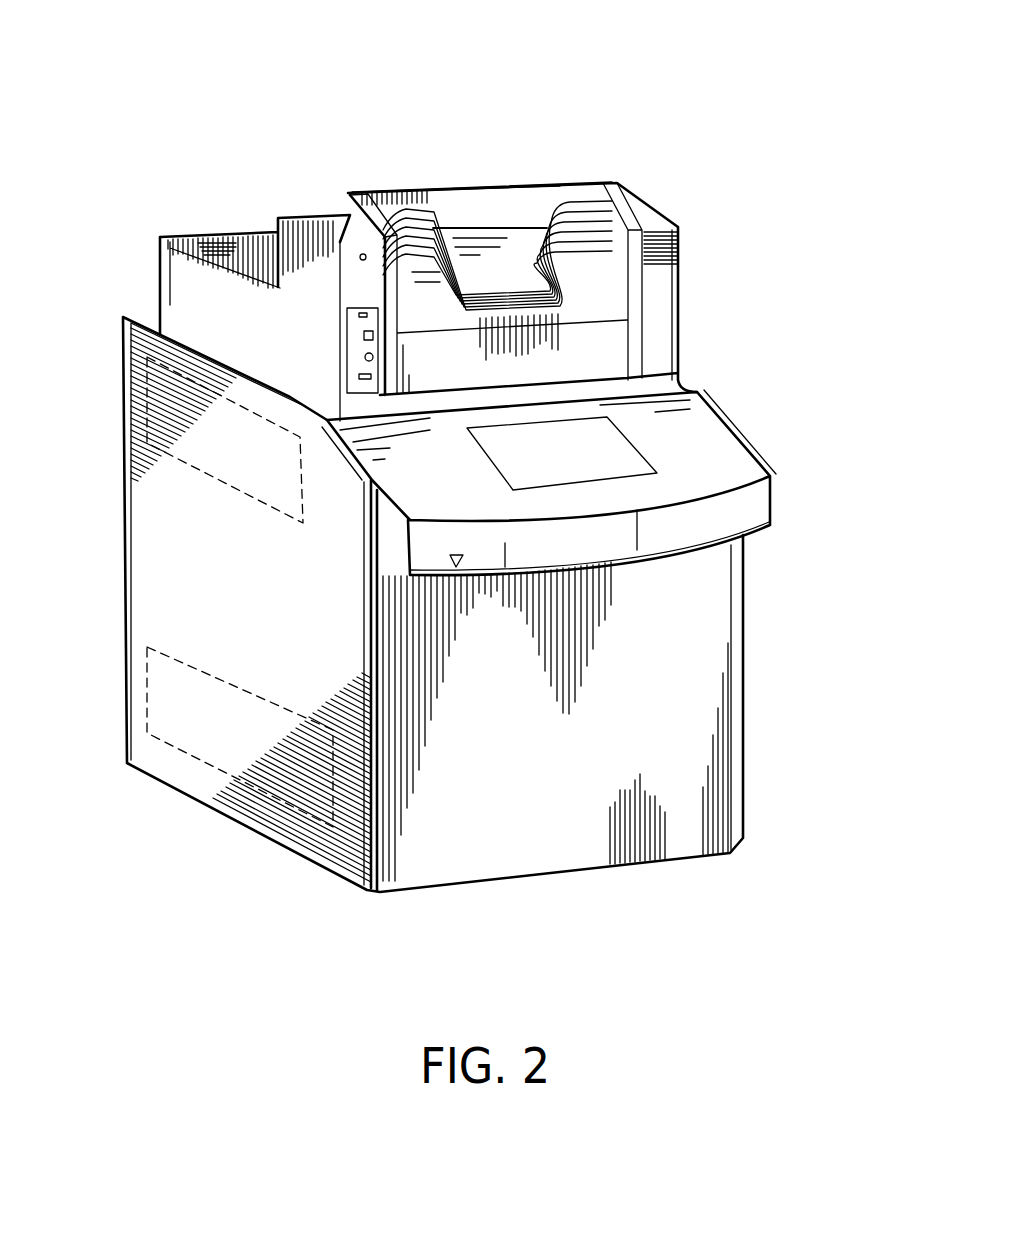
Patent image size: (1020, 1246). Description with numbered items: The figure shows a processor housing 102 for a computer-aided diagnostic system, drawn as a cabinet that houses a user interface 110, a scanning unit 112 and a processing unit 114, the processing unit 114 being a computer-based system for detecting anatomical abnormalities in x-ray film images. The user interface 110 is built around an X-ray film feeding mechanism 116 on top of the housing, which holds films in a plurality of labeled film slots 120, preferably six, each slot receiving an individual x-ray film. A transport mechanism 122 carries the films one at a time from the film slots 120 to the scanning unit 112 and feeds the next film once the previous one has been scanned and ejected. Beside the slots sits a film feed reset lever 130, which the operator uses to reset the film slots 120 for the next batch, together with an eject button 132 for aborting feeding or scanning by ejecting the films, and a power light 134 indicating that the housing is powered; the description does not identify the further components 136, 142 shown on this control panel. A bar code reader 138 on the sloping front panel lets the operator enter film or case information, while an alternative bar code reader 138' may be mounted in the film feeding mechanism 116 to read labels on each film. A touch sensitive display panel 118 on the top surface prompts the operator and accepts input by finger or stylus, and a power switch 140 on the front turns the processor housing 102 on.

The processor housing 102 is at (631, 952).
The user interface 110 is at (748, 266).
The scanning unit 112 is at (137, 397).
The processing unit 114 is at (238, 752).
The X-ray film feeding mechanism 116 is at (609, 162).
The touch sensitive display panel 118 is at (610, 450).
The labeled film slots 120 is at (558, 207).
The transport mechanism 122 is at (406, 180).
The film feed reset lever 130 is at (352, 377).
The eject button 132 is at (362, 334).
The power light 134 is at (361, 254).
The indicator 136 is at (349, 308).
The bar code reader 138 is at (549, 543).
The bar code reader 138' is at (495, 106).
The power switch 140 is at (704, 548).
The button 142 is at (364, 357).